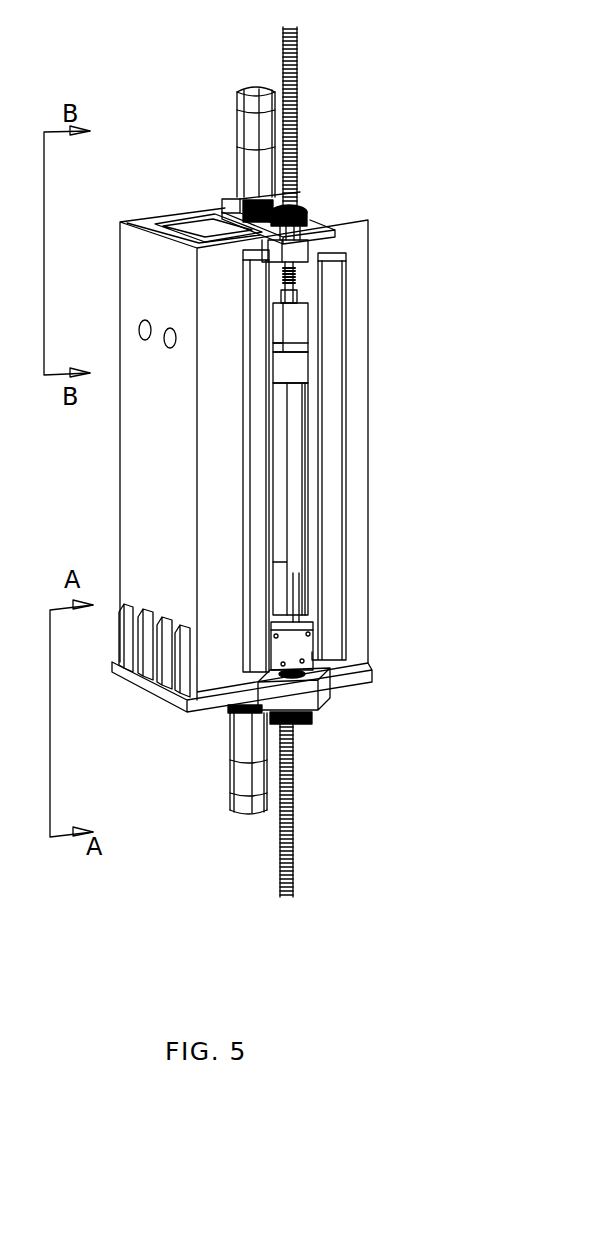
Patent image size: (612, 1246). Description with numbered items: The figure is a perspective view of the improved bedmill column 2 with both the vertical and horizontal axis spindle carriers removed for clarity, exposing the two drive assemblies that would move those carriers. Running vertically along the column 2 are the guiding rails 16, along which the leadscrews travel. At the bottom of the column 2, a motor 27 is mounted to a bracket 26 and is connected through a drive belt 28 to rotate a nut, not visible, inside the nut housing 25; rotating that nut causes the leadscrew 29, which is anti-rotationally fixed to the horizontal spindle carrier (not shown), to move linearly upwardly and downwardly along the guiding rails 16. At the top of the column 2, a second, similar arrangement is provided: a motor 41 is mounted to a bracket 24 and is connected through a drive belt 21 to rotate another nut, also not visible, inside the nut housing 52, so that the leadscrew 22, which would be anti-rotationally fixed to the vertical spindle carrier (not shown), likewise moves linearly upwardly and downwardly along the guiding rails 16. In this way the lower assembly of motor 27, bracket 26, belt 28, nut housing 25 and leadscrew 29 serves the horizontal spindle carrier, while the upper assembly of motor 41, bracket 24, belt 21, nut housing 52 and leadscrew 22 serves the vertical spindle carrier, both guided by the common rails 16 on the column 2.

The column 2 is at (120, 443).
The guiding rails 16 is at (255, 472).
The drive belt 21 is at (227, 205).
The leadscrew 22 is at (298, 75).
The bracket 24 is at (225, 197).
The nut housing 25 is at (322, 697).
The bracket 26 is at (227, 712).
The motor 27 is at (247, 823).
The drive belt 28 is at (303, 722).
The leadscrew 29 is at (287, 902).
The motor 41 is at (237, 97).
The nut housing 52 is at (300, 260).